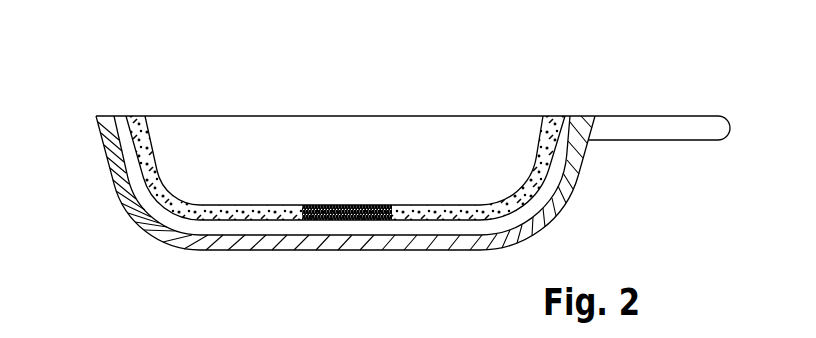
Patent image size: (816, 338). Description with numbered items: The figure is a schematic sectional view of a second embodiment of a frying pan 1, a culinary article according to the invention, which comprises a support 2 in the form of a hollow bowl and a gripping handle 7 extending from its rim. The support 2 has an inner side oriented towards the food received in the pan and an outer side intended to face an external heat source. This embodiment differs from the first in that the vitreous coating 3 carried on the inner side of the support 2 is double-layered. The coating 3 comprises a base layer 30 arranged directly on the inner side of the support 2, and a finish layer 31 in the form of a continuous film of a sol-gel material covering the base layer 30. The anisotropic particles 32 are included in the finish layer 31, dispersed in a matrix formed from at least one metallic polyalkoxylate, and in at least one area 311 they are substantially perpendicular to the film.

The frying pan 1 is at (378, 95).
The support 2 is at (580, 173).
The vitreous coating 3 is at (569, 116).
The base layer 30 is at (122, 127).
The finish layer 31 is at (140, 140).
The anisotropic particles 32 is at (193, 205).
The filler particles 311 is at (343, 203).
The gripping handle 7 is at (652, 127).